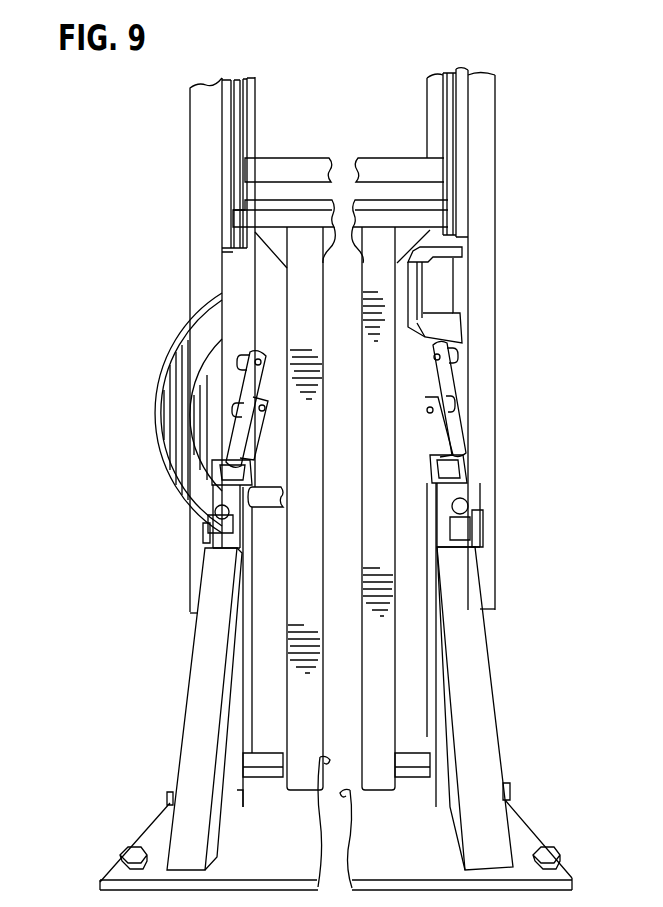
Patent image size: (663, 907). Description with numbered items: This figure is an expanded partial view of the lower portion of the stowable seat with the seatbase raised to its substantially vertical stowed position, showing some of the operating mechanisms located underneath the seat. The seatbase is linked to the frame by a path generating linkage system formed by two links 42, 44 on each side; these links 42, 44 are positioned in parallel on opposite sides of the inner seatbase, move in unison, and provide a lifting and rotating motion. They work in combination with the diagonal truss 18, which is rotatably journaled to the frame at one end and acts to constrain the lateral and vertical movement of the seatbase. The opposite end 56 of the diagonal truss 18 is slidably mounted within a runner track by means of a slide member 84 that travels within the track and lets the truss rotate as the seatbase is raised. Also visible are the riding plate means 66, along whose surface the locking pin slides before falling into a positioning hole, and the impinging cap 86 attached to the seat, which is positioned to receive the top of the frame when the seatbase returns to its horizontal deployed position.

The diagonal truss 18 is at (362, 645).
The link 42 is at (230, 440).
The link 44 is at (448, 440).
The opposite end of the diagonal truss 56 is at (292, 278).
The riding plate means 66 is at (162, 465).
The slide member 84 is at (392, 172).
The impinging cap 86 is at (443, 282).